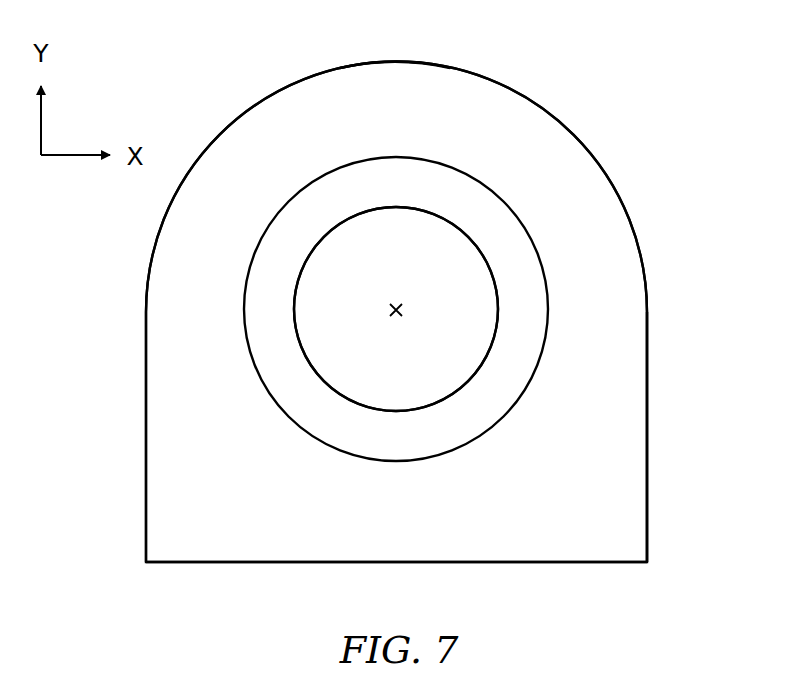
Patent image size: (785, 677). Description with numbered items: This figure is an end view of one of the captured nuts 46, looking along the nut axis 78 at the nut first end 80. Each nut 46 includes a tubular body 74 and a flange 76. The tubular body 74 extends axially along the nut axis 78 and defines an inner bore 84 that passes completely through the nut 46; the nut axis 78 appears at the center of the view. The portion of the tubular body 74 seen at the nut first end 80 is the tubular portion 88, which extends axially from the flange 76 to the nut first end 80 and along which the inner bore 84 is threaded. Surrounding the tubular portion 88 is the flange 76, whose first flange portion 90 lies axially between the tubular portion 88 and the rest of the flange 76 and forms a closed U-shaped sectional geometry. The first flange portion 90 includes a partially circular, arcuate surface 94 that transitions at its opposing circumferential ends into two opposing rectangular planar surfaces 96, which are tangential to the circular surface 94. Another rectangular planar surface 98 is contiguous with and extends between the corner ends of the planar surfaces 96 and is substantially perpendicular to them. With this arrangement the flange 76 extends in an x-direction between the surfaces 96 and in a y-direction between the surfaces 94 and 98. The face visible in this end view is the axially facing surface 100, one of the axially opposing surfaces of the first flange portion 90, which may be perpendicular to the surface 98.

The nut 46 is at (646, 118).
The tubular body 74 is at (477, 163).
The tubular portion 88 is at (396, 309).
The flange 76 is at (655, 231).
The nut axis 78 is at (404, 312).
The nut first end 80 is at (370, 422).
The inner bore 84 is at (382, 259).
The first flange portion 90 is at (656, 360).
The partially circular surface 94 is at (388, 60).
The planar surfaces 96 is at (146, 469).
The planar surface 98 is at (357, 563).
The axially opposing surface 100 is at (213, 522).